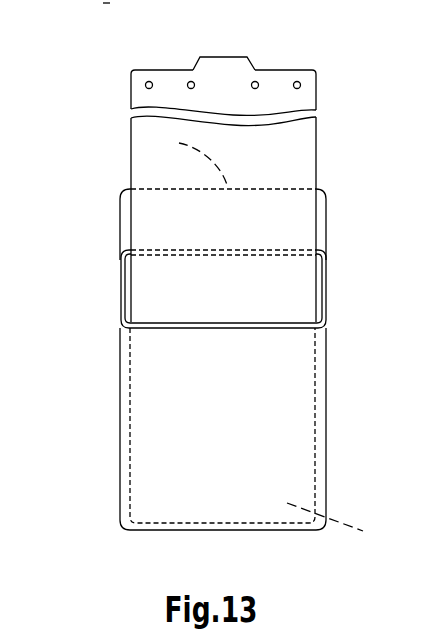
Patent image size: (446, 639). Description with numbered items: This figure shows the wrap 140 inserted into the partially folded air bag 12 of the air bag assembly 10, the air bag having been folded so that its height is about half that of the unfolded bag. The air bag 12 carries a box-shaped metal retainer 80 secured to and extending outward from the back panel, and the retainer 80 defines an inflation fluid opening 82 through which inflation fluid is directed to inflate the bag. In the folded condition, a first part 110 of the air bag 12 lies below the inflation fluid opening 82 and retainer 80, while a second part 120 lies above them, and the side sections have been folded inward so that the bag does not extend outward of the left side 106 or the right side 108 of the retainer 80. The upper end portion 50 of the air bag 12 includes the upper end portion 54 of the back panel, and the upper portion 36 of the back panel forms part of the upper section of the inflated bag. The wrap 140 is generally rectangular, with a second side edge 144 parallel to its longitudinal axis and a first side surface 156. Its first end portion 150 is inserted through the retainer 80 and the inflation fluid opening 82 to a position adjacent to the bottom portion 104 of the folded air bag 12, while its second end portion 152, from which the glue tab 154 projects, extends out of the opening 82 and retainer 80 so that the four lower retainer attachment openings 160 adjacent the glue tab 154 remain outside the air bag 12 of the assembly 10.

The carrying case 10 is at (221, 448).
The air bag 12 is at (328, 425).
The upper portion of the back panel 36 is at (277, 389).
The upper end portion 50 is at (187, 161).
The upper end portion of the back panel 54 is at (320, 211).
The retainer 80 is at (223, 330).
The inflation fluid opening 82 is at (302, 276).
The bottom portion 104 is at (254, 532).
The left side of the retainer 106 is at (318, 297).
The right side of the retainer 108 is at (126, 279).
The first part of the air bag 110 is at (109, 445).
The second part of the air bag 120 is at (115, 227).
The wrap 140 is at (130, 149).
The second side edge 144 is at (127, 5).
The first end portion of the wrap 150 is at (338, 531).
The second end portion of the wrap 152 is at (316, 92).
The glue tab 154 is at (226, 62).
The first side surface 156 is at (283, 160).
The lower retainer attachment openings 160 is at (299, 82).